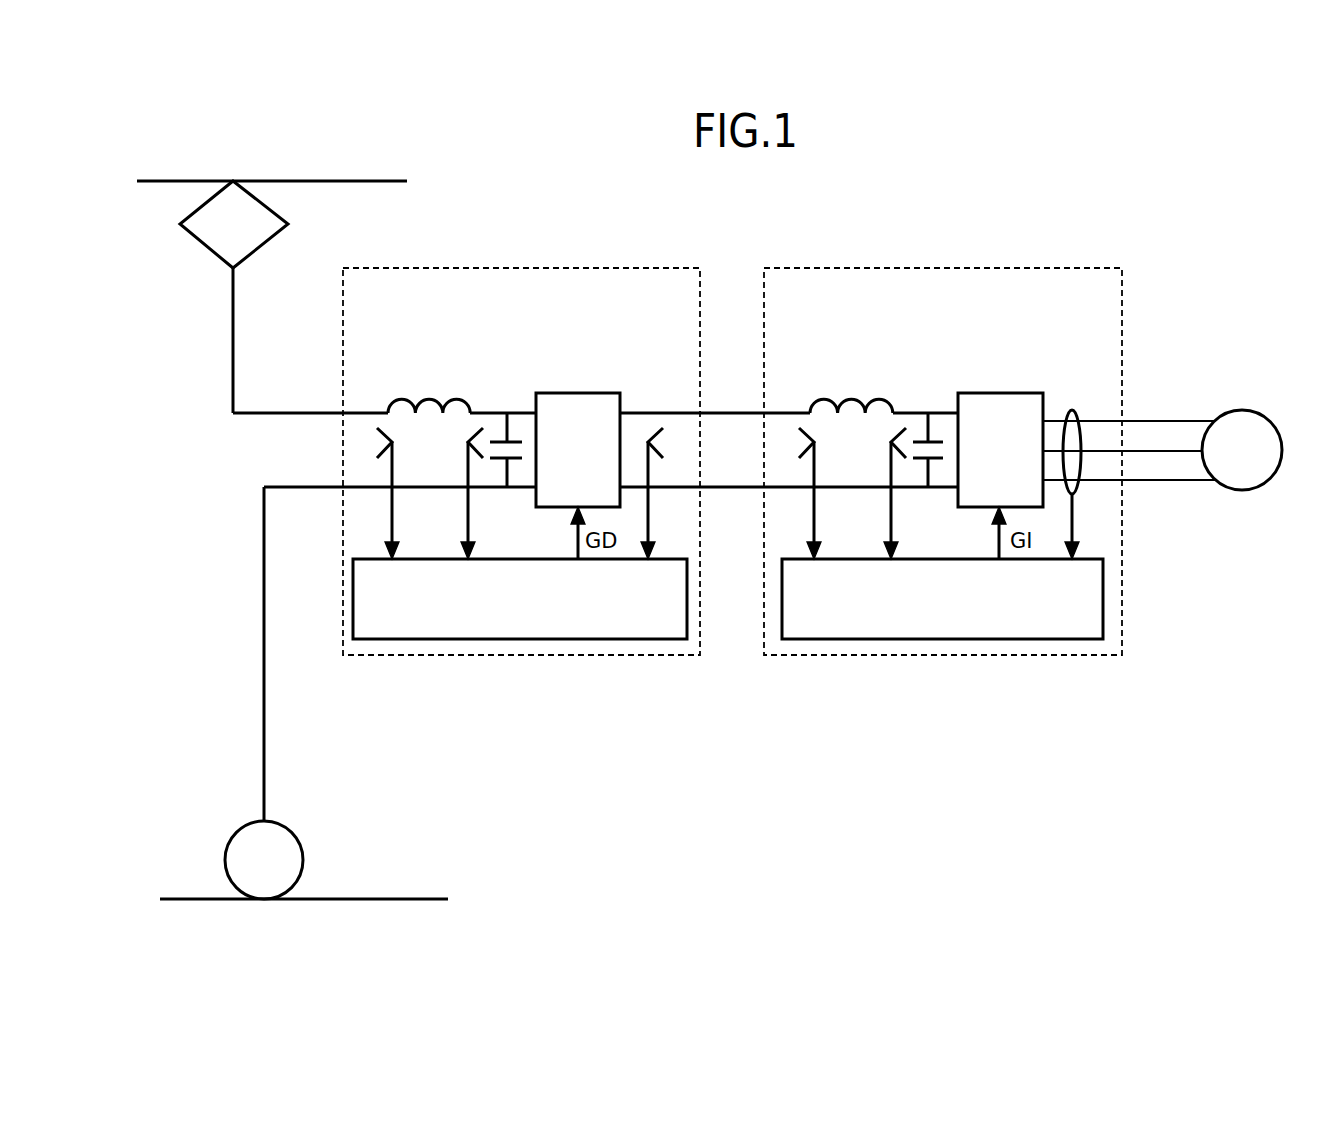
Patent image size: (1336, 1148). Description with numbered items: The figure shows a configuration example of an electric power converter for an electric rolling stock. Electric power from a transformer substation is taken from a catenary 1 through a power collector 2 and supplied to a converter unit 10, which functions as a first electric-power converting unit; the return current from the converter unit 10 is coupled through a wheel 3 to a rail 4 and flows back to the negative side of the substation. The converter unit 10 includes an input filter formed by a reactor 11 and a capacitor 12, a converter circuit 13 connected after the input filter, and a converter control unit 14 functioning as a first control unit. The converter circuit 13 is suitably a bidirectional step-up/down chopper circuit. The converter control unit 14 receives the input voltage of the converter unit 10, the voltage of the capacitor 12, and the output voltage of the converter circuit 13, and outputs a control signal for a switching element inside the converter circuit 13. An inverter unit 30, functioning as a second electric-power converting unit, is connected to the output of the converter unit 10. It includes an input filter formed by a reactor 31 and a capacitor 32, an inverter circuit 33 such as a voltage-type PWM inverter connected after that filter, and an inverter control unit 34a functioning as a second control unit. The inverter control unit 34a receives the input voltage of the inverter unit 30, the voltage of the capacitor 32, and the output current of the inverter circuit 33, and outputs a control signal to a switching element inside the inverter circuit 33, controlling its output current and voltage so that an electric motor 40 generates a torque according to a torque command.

The catenary 1 is at (351, 181).
The power collector 2 is at (290, 224).
The wheel 3 is at (285, 833).
The rail 4 is at (411, 899).
The converter unit 10 is at (566, 268).
The reactor 11 is at (461, 399).
The capacitor 12 is at (511, 441).
The converter circuit 13 is at (578, 393).
The converter control unit 14 is at (529, 640).
The inverter unit 30 is at (910, 268).
The reactor 31 is at (882, 399).
The capacitor 32 is at (931, 441).
The inverter circuit 33 is at (1000, 393).
The inverter control unit 34a is at (954, 640).
The electric motor 40 is at (1249, 411).